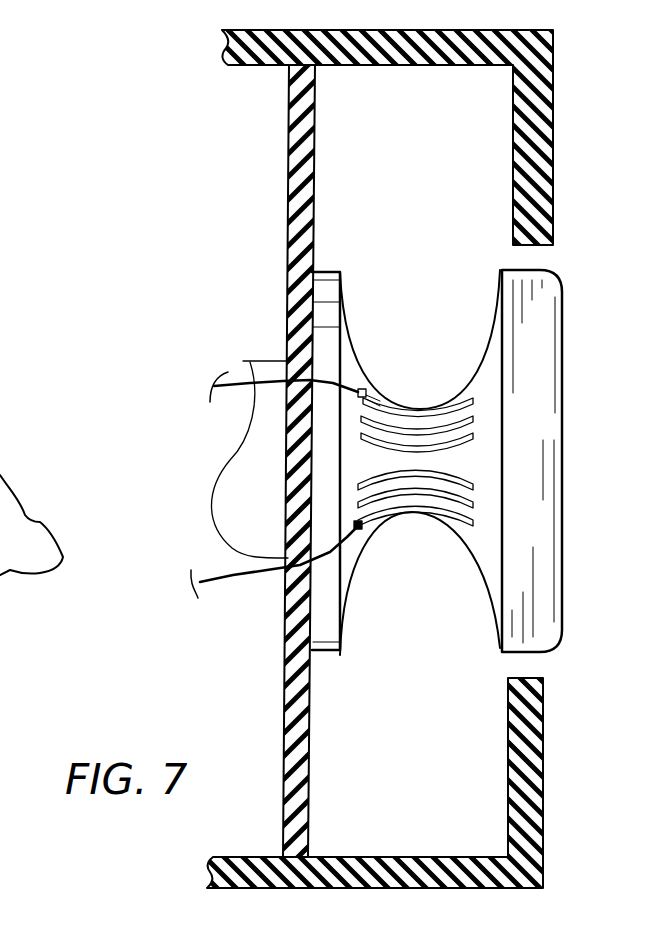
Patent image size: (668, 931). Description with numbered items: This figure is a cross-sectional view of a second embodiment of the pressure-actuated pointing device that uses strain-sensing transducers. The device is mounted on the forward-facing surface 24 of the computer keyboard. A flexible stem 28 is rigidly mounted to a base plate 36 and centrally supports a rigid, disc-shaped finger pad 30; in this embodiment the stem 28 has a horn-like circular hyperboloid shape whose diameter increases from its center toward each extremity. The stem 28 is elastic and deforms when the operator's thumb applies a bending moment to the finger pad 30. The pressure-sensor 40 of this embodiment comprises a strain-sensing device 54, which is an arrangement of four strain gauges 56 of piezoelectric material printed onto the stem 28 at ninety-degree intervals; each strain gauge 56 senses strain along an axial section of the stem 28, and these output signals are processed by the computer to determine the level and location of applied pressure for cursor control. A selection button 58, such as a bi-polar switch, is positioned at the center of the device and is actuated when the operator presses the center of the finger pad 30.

The forward-facing surface 24 is at (553, 137).
The flexible stem 28 is at (452, 614).
The finger pad 30 is at (537, 360).
The base plate 36 is at (285, 654).
The pressure-sensor 40 is at (496, 253).
The strain-sensing device 54 is at (467, 458).
The strain gauges 56 is at (402, 415).
The selection button 58 is at (252, 362).